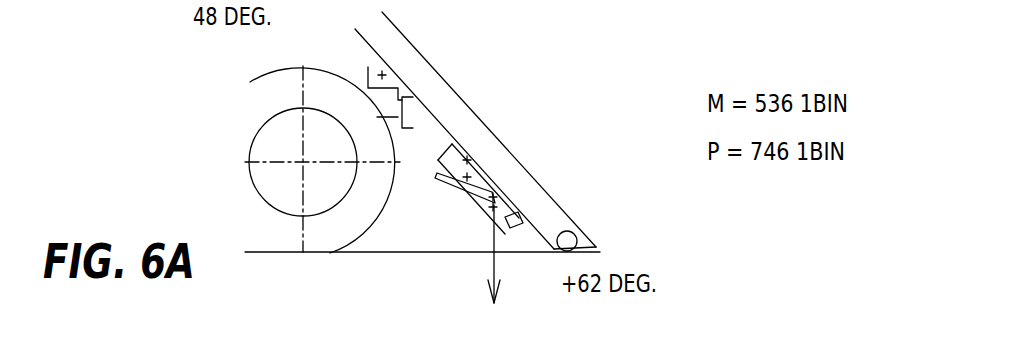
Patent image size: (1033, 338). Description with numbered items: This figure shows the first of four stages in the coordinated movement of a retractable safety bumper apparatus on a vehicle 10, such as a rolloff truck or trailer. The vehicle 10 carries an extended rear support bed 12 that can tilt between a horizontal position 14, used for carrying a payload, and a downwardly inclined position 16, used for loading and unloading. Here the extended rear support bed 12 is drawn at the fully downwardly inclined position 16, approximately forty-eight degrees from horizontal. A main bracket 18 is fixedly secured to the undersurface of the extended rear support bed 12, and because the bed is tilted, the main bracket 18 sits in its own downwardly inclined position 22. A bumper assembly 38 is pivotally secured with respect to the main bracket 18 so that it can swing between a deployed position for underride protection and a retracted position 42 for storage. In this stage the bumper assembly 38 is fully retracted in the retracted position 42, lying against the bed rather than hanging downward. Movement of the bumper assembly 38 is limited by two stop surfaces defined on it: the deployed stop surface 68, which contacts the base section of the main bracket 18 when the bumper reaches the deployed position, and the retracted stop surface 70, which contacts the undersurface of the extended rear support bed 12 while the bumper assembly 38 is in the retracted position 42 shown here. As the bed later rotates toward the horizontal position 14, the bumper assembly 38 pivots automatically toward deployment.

The vehicle 10 is at (293, 195).
The extended rear support bed 12 is at (490, 142).
The horizontal position 14 is at (597, 247).
The downwardly inclined position 16 is at (563, 212).
The main bracket 18 is at (441, 153).
The downwardly inclined position of main bracket 22 is at (455, 140).
The bumper assembly 38 is at (437, 174).
The retracted position 42 is at (490, 211).
The deployed stop surface 68 is at (440, 166).
The retracted stop surface 70 is at (524, 216).